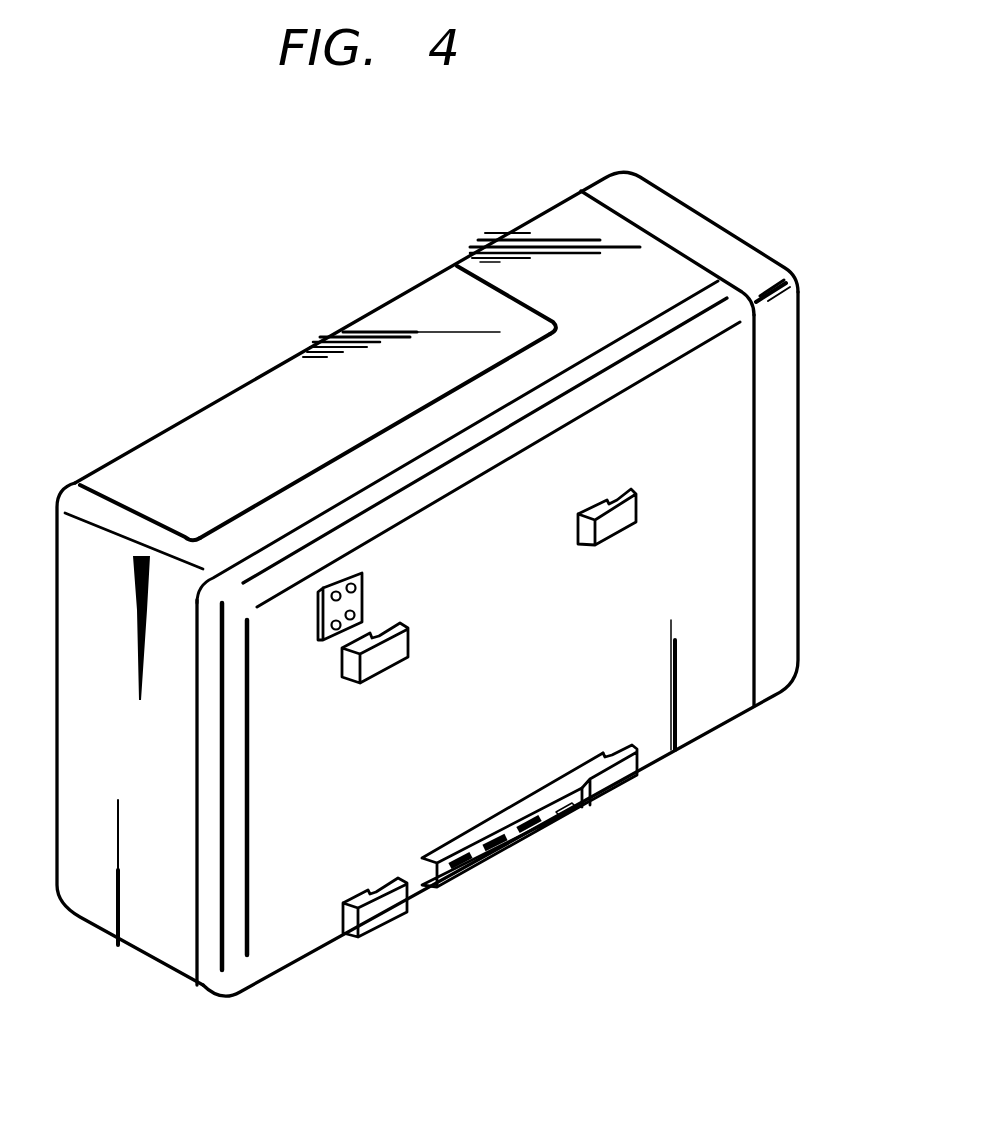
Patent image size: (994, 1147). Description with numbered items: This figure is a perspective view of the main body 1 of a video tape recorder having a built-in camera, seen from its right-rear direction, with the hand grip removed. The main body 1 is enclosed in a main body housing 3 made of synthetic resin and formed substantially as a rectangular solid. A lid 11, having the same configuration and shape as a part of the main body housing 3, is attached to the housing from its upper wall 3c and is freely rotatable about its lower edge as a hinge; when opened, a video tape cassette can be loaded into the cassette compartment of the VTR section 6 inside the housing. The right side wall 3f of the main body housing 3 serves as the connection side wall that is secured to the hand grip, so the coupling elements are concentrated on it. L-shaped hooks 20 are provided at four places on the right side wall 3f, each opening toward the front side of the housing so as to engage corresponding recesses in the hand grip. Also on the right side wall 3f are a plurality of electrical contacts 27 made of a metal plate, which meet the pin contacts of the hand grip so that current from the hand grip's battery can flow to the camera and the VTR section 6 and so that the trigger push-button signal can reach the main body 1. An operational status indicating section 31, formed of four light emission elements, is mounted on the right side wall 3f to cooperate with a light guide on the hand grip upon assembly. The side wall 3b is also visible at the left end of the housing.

The main body 1 is at (775, 246).
The main body housing 3 is at (787, 342).
The side wall of case 3b is at (97, 910).
The upper wall 3c is at (503, 267).
The right side wall 3f is at (717, 707).
The VTR section 6 is at (303, 476).
The lid 11 is at (146, 470).
The hooks 20 is at (620, 523).
The electrical contacts 27 is at (472, 865).
The operational status indicating section 31 is at (361, 581).